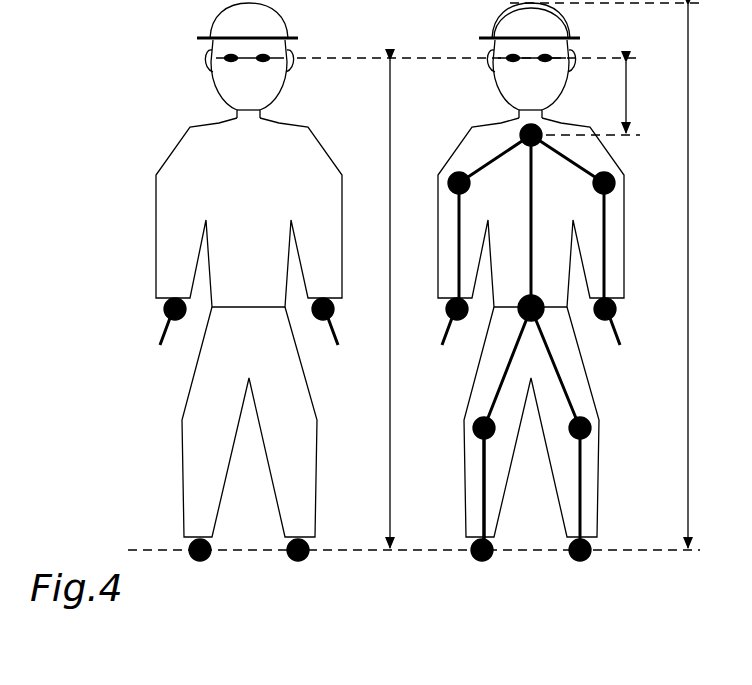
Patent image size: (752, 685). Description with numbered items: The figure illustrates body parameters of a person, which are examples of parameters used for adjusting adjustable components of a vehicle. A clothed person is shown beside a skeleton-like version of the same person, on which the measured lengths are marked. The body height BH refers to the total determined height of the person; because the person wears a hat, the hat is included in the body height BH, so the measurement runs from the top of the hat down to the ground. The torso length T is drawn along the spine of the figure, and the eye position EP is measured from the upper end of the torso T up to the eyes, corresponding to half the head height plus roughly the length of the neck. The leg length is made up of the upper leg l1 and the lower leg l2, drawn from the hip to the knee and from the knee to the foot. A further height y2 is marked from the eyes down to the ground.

The torso length T is at (529, 204).
The upper leg l1 is at (506, 365).
The lower leg l2 is at (483, 480).
The eye position EP is at (643, 97).
The body height BH is at (705, 276).
The eye height above ground y2 is at (406, 304).